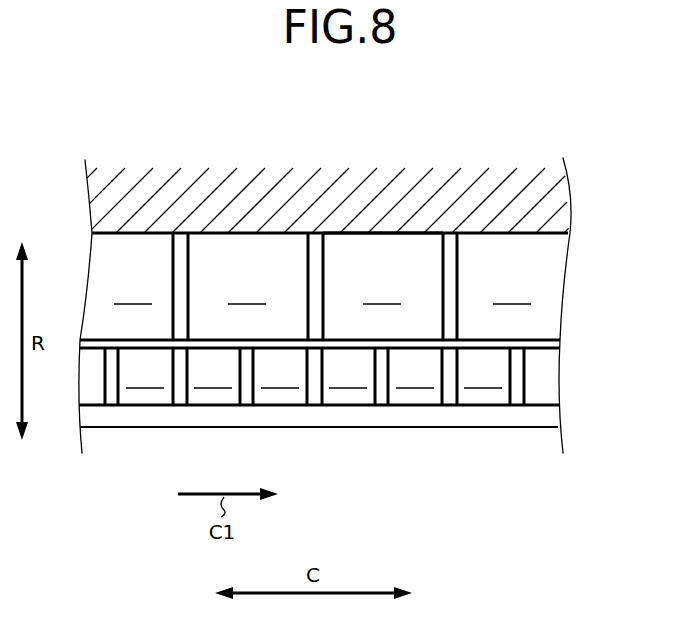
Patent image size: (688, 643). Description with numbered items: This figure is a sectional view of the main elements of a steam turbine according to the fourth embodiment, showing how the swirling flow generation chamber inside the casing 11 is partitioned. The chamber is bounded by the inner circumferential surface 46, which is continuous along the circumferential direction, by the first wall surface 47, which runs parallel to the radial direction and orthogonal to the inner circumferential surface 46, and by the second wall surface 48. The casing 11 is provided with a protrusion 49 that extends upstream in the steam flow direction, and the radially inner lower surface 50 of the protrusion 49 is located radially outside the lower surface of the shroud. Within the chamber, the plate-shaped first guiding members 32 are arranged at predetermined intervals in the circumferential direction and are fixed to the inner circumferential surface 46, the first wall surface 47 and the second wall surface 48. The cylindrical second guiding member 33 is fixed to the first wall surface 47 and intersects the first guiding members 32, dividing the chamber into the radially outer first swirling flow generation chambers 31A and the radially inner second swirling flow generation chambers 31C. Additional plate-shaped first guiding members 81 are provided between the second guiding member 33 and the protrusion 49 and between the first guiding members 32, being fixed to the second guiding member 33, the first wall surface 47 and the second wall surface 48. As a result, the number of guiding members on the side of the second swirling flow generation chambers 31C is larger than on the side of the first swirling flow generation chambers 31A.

The casing 11 is at (371, 157).
The first swirling flow generation chambers 31A is at (320, 310).
The second swirling flow generation chambers 31C is at (313, 377).
The first guiding members 32 is at (170, 257).
The second guiding member 33 is at (538, 350).
The inner circumferential surface 46 is at (402, 234).
The first wall surface 47 is at (537, 252).
The second wall surface 48 is at (417, 393).
The protrusion 49 is at (323, 418).
The lower surface 50 is at (158, 430).
The first guiding members 81 is at (112, 397).